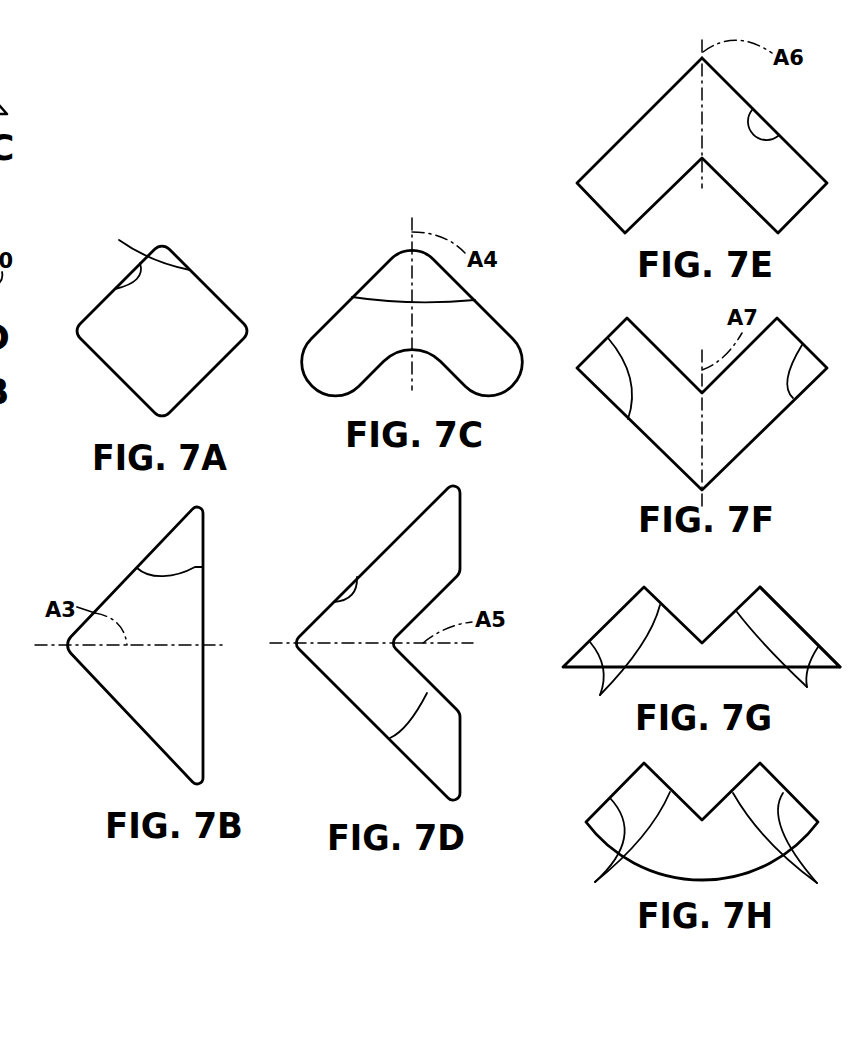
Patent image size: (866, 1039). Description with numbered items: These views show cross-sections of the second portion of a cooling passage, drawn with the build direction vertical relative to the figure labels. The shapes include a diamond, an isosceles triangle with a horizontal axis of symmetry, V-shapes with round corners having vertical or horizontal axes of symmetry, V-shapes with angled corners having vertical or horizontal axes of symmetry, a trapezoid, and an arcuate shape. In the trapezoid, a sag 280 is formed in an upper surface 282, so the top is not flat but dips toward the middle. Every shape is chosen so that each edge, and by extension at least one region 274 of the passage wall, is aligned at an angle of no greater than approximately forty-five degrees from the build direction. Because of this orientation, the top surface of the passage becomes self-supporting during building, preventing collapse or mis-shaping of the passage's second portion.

In FIG. 7A, the region 274 is at (140, 263).
In FIG. 7B, the region 274 is at (203, 567).
In FIG. 7C, the region 274 is at (345, 305).
In FIG. 7D, the region 274 is at (357, 577).
In FIG. 7E, the region 274 is at (663, 195).
In FIG. 7F, the region 274 is at (680, 370).
In FIG. 7G, the region 274 is at (703, 661).
In FIG. 7H, the region 274 is at (707, 831).
In FIG. 7G, the sag 280 is at (697, 622).
In FIG. 7G, the upper surface 282 is at (833, 603).